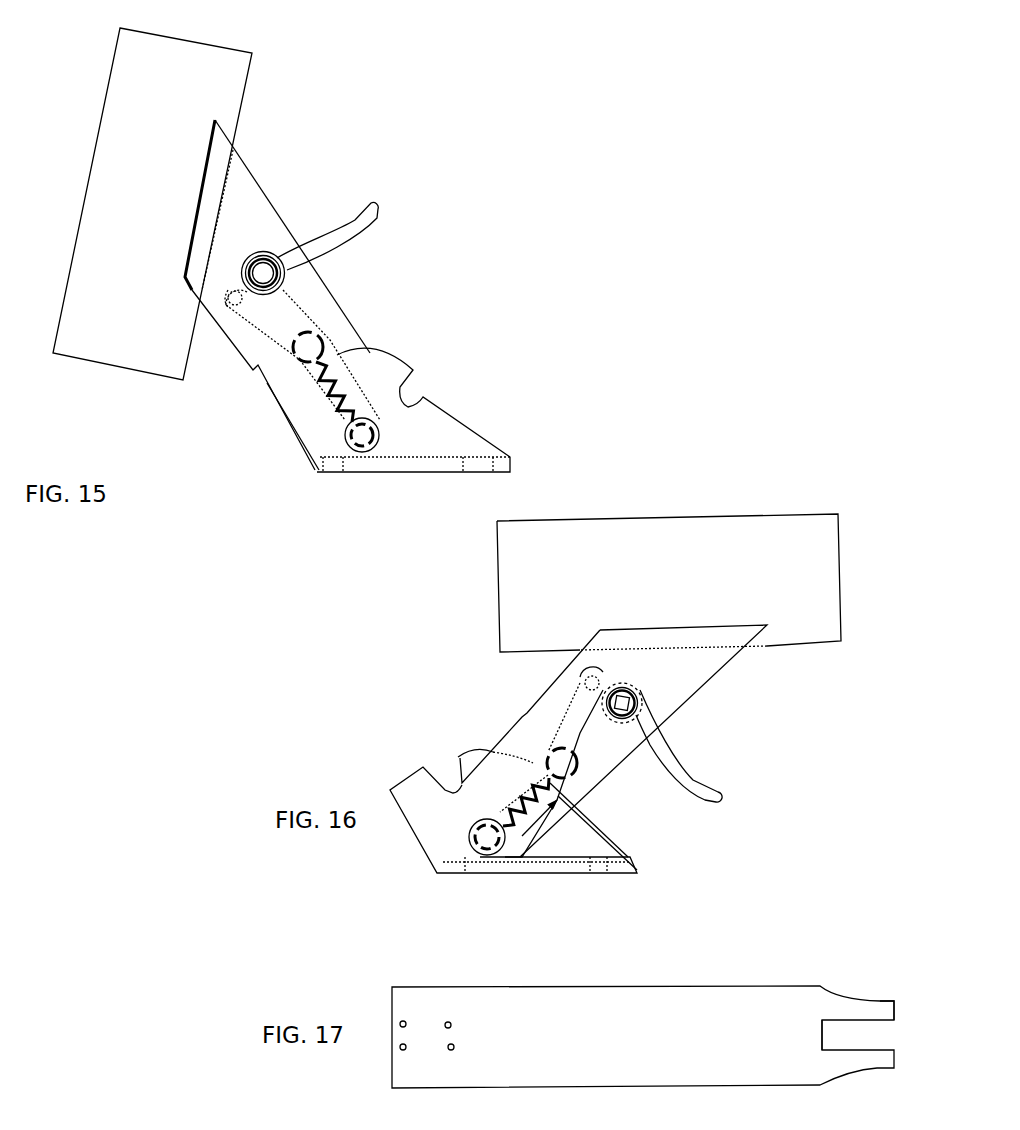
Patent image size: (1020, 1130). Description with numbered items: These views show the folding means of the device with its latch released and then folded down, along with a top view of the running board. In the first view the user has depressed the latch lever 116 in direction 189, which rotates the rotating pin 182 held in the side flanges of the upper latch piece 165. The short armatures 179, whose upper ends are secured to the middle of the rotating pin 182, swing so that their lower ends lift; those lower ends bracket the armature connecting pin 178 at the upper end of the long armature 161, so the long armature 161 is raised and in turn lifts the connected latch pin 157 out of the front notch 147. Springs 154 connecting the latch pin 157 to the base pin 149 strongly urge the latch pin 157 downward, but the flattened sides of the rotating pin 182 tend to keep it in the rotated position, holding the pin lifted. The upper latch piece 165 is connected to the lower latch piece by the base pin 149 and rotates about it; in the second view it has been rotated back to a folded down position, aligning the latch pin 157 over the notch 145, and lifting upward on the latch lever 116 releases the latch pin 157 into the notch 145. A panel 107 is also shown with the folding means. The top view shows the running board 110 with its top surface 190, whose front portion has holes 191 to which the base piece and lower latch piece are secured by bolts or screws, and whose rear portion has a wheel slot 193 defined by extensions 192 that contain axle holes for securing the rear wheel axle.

In FIG. 15, the panel 107 is at (217, 98).
In FIG. 16, the panel 107 is at (672, 565).
In FIG. 17, the running board 110 is at (403, 998).
In FIG. 15, the latch lever 116 is at (357, 228).
In FIG. 16, the latch lever 116 is at (678, 768).
In FIG. 15, the notch 145 is at (417, 393).
In FIG. 16, the notch 145 is at (637, 870).
In FIG. 15, the front notch 147 is at (327, 402).
In FIG. 16, the front notch 147 is at (447, 770).
In FIG. 15, the base pin 149 is at (360, 447).
In FIG. 16, the base pin 149 is at (467, 847).
In FIG. 15, the springs 154 is at (313, 383).
In FIG. 15, the latch pin 157 is at (317, 343).
In FIG. 16, the latch pin 157 is at (572, 780).
In FIG. 15, the long armature 161 is at (273, 317).
In FIG. 16, the upper latch piece 165 is at (545, 712).
In FIG. 15, the armature connecting pin 178 is at (221, 311).
In FIG. 15, the short armatures 179 is at (227, 280).
In FIG. 15, the rotating pin 182 is at (263, 278).
In FIG. 15, the direction 189 is at (345, 215).
In FIG. 17, the top surface 190 is at (630, 1035).
In FIG. 17, the holes 191 is at (448, 1030).
In FIG. 17, the extensions 192 is at (880, 1000).
In FIG. 17, the wheel slot 193 is at (857, 1037).